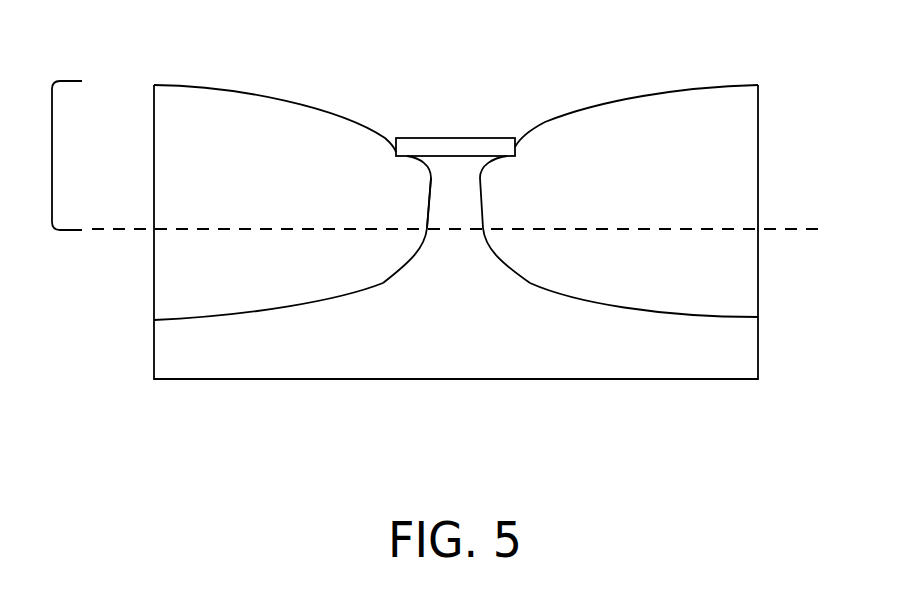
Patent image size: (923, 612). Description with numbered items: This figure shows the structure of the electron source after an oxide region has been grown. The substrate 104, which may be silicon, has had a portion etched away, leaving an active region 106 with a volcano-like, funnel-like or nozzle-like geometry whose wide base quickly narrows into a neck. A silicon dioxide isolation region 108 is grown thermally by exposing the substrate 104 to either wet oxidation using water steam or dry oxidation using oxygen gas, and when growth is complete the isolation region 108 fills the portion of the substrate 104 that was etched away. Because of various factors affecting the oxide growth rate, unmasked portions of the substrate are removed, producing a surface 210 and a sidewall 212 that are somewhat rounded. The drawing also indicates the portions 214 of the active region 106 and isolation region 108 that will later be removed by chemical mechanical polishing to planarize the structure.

The substrate 104 is at (738, 357).
The active region 106 is at (450, 272).
The isolation region 108 is at (244, 163).
The surface 210 is at (342, 293).
The sidewall 212 is at (425, 218).
The portions 214 is at (51, 140).